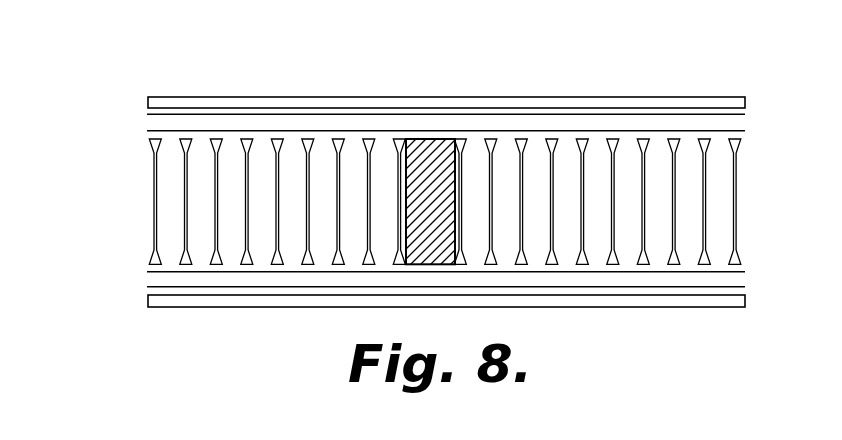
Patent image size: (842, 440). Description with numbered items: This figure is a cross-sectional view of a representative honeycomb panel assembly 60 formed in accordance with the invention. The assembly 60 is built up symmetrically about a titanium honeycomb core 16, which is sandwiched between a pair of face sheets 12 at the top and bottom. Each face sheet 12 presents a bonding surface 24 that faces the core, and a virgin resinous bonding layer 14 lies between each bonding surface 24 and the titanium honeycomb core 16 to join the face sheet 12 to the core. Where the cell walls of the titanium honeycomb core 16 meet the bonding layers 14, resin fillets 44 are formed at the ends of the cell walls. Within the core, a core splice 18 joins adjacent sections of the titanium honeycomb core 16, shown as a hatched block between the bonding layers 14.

The honeycomb panel assembly 60 is at (438, 90).
The face sheet 12 is at (712, 96).
The bonding surface 24 is at (740, 114).
The virgin resinous bonding layer 14 is at (152, 128).
The titanium honeycomb core 16 is at (442, 194).
The resin fillet 44 is at (150, 151).
The core splice 18 is at (405, 215).